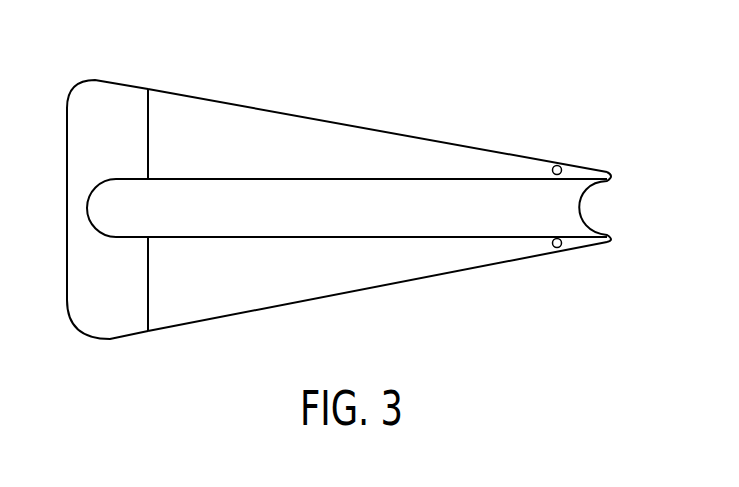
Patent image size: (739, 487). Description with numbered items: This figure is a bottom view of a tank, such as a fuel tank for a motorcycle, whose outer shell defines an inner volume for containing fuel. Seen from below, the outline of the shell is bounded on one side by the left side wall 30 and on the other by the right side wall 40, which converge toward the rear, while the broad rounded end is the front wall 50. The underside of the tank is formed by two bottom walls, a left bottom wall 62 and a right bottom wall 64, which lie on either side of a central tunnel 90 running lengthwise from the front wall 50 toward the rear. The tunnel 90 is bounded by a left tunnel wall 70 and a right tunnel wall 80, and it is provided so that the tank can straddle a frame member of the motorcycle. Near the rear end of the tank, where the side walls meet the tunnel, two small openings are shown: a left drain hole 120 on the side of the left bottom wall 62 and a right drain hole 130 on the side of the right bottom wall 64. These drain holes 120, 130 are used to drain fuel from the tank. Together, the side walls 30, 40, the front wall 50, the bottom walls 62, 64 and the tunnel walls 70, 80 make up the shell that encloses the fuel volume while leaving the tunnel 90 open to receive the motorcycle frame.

The left side wall 30 is at (351, 121).
The right side wall 40 is at (408, 283).
The front wall 50 is at (120, 92).
The left bottom wall 62 is at (316, 158).
The right bottom wall 64 is at (317, 285).
The left tunnel wall 70 is at (392, 180).
The right tunnel wall 80 is at (473, 237).
The tunnel 90 is at (513, 193).
The left drain hole 120 is at (561, 166).
The right drain hole 130 is at (558, 248).